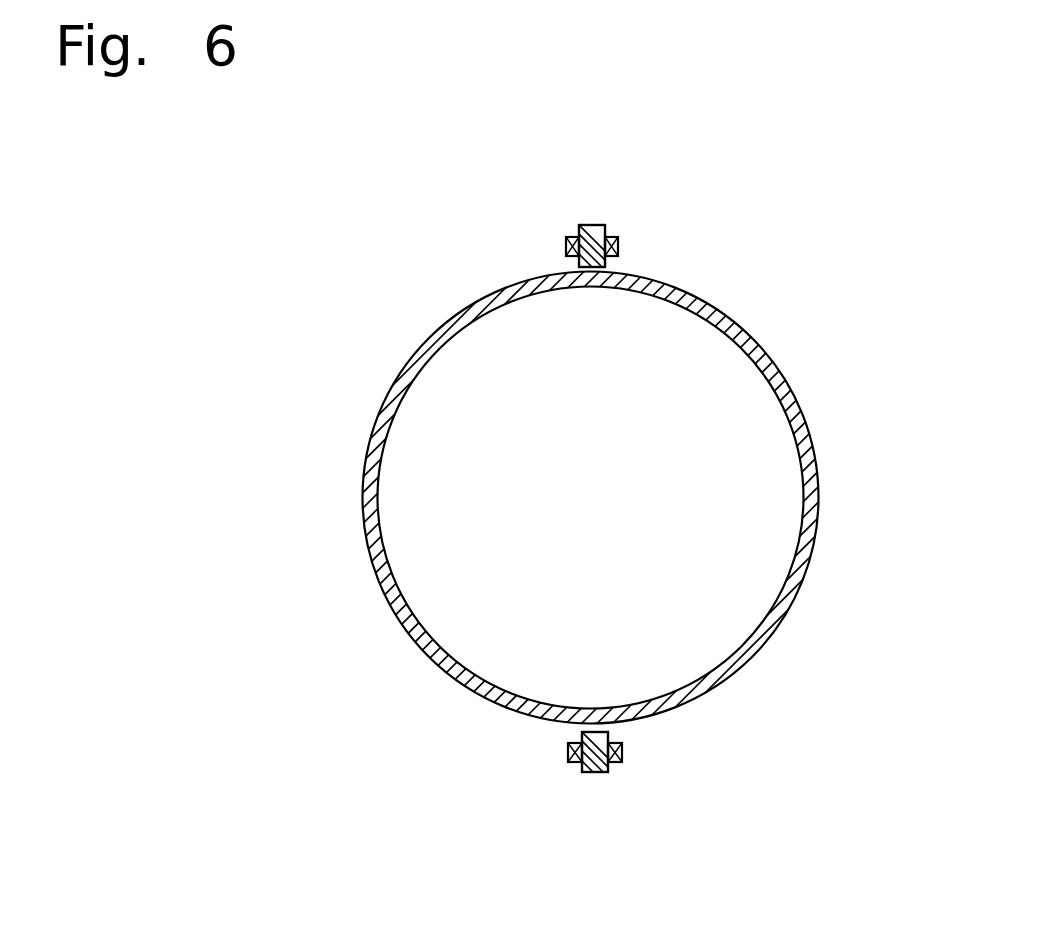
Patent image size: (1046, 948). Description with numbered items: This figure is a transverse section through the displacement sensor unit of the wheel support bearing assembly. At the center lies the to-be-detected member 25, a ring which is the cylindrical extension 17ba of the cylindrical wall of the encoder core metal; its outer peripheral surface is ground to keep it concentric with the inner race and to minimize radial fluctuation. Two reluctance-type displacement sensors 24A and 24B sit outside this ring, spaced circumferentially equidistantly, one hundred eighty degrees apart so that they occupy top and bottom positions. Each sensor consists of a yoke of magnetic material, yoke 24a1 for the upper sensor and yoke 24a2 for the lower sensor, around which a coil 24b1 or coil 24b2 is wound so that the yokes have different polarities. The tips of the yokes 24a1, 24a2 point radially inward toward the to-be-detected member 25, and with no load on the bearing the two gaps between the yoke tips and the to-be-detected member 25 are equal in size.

The to-be-detected member 25 is at (464, 474).
The cylindrical extension 17ba is at (373, 425).
The displacement sensor 24A is at (658, 165).
The yoke 24a1 is at (591, 223).
The coil 24b1 is at (619, 243).
The displacement sensor 24B is at (662, 835).
The yoke 24a2 is at (595, 772).
The coil 24b2 is at (552, 857).